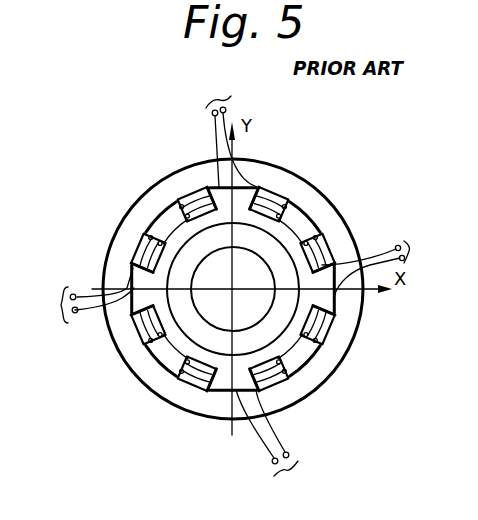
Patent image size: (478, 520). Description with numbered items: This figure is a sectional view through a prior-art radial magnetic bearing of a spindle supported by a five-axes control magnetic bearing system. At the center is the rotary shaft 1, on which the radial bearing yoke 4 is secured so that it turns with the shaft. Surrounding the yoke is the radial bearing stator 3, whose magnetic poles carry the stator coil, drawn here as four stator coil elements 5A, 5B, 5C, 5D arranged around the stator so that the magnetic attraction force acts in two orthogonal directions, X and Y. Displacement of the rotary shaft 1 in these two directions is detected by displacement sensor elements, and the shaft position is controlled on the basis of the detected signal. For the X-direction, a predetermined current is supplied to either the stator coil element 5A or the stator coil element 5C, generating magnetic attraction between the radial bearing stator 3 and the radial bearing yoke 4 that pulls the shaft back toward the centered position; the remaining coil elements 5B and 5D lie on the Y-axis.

The rotary shaft 1 is at (255, 303).
The radial bearing stator 3 is at (306, 183).
The radial bearing yoke 4 is at (272, 250).
The stator coil element 5A is at (384, 267).
The stator coil element 5B is at (228, 130).
The stator coil element 5C is at (82, 295).
The stator coil element 5D is at (273, 445).